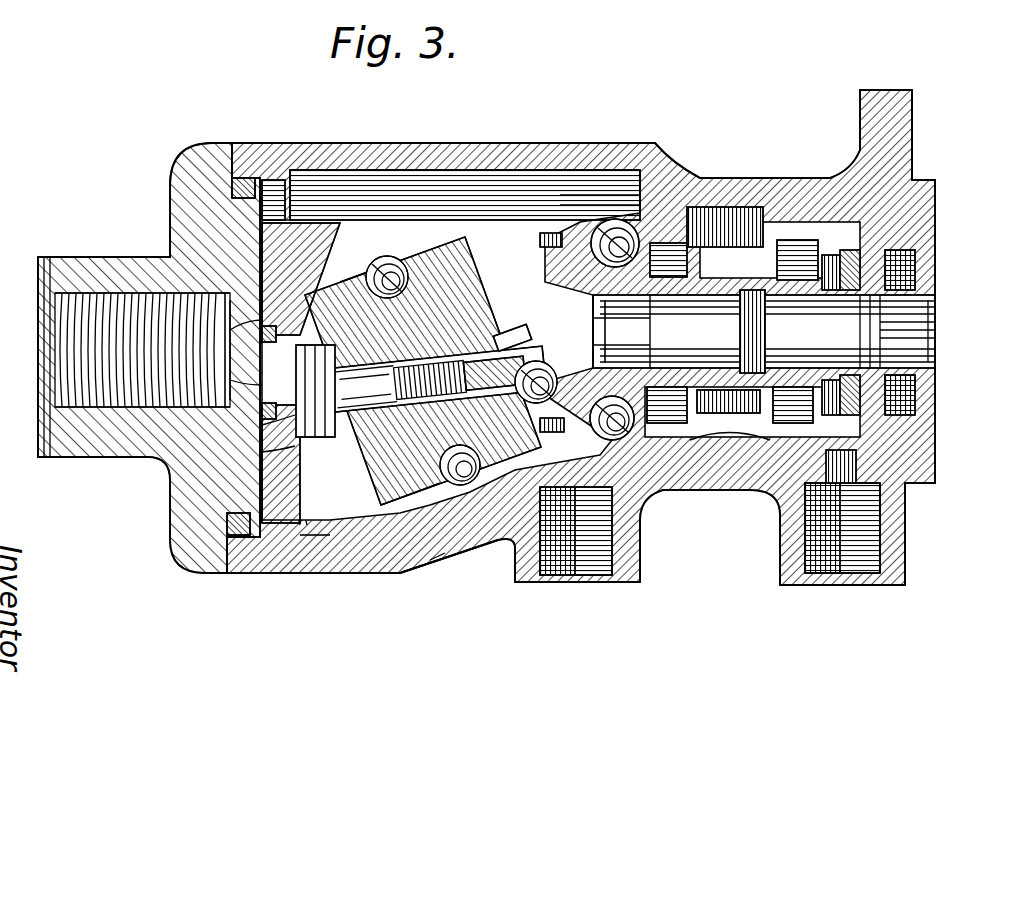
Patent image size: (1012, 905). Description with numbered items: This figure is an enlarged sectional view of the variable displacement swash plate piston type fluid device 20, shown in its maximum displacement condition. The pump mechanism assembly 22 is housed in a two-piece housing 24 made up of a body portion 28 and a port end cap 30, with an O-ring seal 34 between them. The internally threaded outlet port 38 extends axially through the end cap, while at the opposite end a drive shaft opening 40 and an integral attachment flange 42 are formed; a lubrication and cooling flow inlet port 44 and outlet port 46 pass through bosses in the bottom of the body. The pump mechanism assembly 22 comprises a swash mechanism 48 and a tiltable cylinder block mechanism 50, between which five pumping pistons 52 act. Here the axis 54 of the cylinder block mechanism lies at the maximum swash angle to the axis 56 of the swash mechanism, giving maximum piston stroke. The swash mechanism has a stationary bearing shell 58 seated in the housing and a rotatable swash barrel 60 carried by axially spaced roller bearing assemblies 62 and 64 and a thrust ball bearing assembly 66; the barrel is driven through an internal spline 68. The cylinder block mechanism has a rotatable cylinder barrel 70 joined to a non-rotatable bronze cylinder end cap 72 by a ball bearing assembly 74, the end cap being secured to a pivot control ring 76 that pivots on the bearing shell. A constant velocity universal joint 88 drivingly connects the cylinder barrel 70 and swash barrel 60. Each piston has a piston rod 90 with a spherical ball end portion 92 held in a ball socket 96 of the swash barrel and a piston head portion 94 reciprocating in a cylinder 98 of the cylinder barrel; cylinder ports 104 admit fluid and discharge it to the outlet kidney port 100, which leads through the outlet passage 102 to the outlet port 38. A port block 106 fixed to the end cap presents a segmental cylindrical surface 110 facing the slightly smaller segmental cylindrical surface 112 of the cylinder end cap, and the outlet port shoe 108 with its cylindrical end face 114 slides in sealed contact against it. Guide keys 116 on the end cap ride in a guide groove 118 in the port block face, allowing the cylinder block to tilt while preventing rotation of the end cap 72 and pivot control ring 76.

The fluid device 20 is at (495, 573).
The pump mechanism assembly 22 is at (500, 213).
The housing 24 is at (458, 152).
The body portion 28 is at (662, 230).
The port end cap 30 is at (178, 180).
The O-ring seal 34 is at (244, 178).
The outlet port 38 is at (40, 358).
The drive shaft opening 40 is at (930, 290).
The attachment flange 42 is at (884, 89).
The lubrication and cooling flow inlet port 44 is at (852, 560).
The outlet port 46 is at (582, 560).
The swash mechanism 48 is at (712, 270).
The cylinder block mechanism 50 is at (436, 265).
The pumping pistons 52 is at (495, 448).
The axis of the cylinder block mechanism 54 is at (388, 392).
The axis of the swash mechanism 56 is at (975, 340).
The bearing shell 58 is at (716, 448).
The swash barrel 60 is at (722, 311).
The roller bearing assembly 62 is at (762, 460).
The roller bearing assembly 64 is at (676, 455).
The thrust ball bearing assembly 66 is at (602, 202).
The internal spline 68 is at (816, 306).
The cylinder barrel 70 is at (468, 248).
The cylinder end cap 72 is at (328, 248).
The ball bearing assembly 74 is at (380, 252).
The pivot control ring 76 is at (430, 555).
The constant velocity universal joint 88 is at (545, 240).
The piston rod 90 is at (548, 433).
The ball end portion 92 is at (620, 346).
The piston head portion 94 is at (425, 482).
The ball sockets 96 is at (598, 436).
The cylinders 98 is at (495, 342).
The outlet kidney port 100 is at (333, 436).
The outlet passage 102 is at (232, 400).
The cylinder ports 104 is at (425, 445).
The port block 106 is at (286, 196).
The outlet port shoe 108 is at (268, 368).
The segmental cylindrical surface 110 is at (298, 472).
The segmental cylindrical surface 112 is at (266, 452).
The cylindrical end face 114 is at (266, 426).
The guide keys 116 is at (282, 312).
The guide groove 118 is at (262, 272).